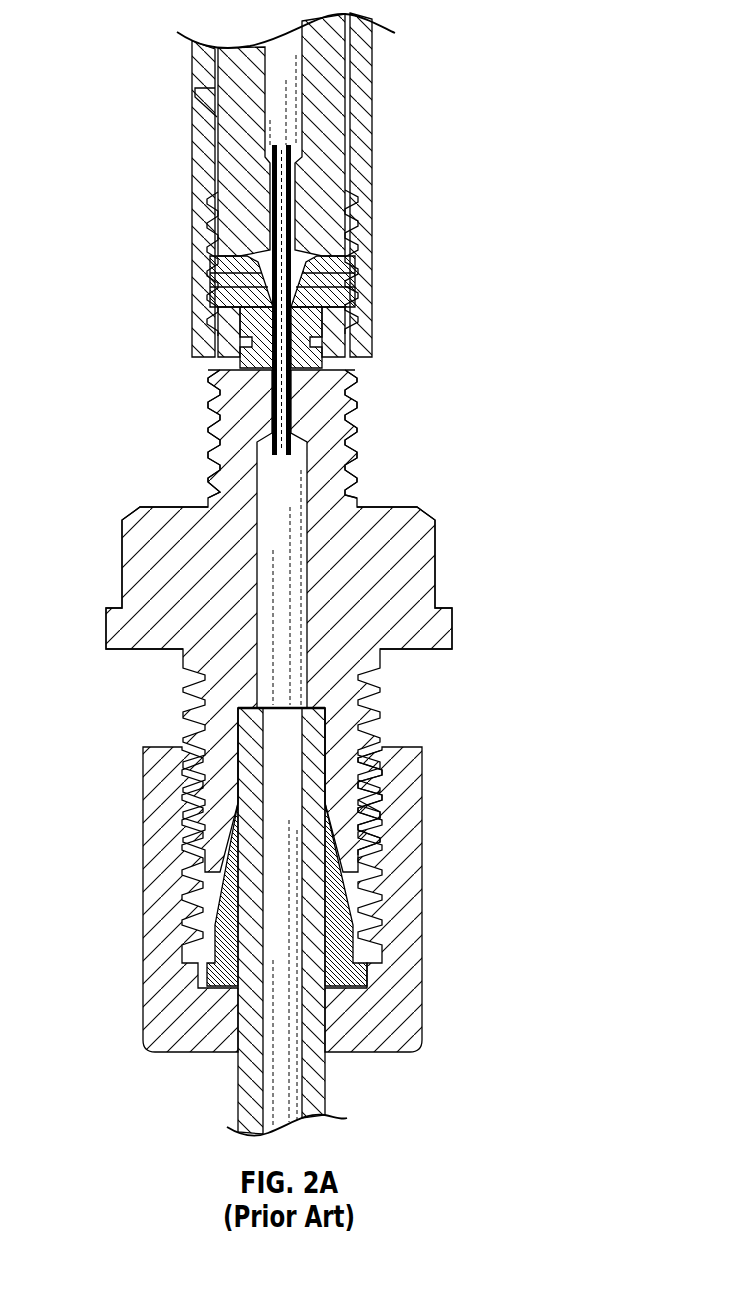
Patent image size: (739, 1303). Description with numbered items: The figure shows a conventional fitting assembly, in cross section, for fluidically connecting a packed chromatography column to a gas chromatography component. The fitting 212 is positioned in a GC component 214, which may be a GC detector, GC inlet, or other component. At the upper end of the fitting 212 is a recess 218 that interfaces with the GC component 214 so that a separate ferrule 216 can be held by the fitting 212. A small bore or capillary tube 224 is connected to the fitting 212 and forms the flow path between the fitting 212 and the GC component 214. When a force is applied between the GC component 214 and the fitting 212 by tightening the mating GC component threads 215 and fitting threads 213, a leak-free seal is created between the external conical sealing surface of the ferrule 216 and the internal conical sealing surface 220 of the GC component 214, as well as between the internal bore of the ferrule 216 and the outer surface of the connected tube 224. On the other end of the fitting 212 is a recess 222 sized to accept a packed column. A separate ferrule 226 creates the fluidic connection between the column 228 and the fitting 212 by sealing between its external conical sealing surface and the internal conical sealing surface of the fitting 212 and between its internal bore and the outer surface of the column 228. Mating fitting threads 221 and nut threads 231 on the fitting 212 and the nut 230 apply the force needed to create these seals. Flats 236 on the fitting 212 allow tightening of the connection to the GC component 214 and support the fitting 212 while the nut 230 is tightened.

The fitting 212 is at (400, 573).
The fitting threads 213 is at (207, 422).
The GC component 214 is at (342, 95).
The GC component threads 215 is at (202, 253).
The ferrule 216 is at (302, 327).
The recess 218 is at (252, 343).
The internal conical sealing surface 220 is at (270, 272).
The fitting threads 221 is at (378, 763).
The recess 222 is at (323, 768).
The capillary tube 224 is at (290, 452).
The ferrule 226 is at (337, 930).
The column 228 is at (293, 1088).
The nut 230 is at (402, 993).
The nut threads 231 is at (380, 847).
The flats 236 is at (120, 558).